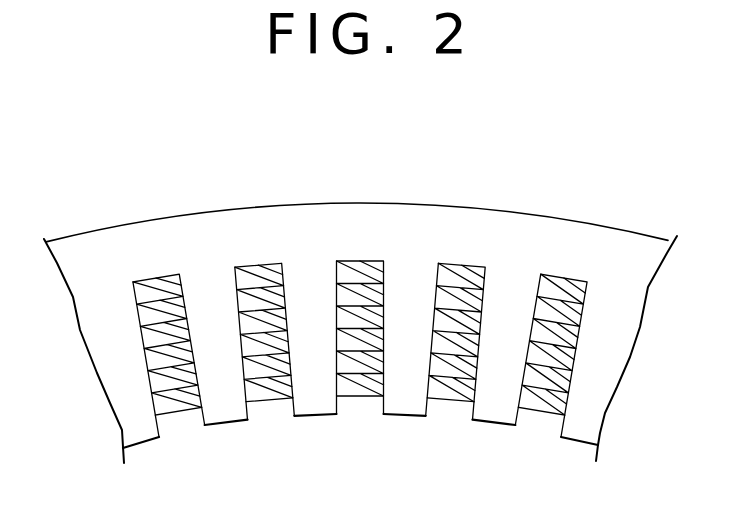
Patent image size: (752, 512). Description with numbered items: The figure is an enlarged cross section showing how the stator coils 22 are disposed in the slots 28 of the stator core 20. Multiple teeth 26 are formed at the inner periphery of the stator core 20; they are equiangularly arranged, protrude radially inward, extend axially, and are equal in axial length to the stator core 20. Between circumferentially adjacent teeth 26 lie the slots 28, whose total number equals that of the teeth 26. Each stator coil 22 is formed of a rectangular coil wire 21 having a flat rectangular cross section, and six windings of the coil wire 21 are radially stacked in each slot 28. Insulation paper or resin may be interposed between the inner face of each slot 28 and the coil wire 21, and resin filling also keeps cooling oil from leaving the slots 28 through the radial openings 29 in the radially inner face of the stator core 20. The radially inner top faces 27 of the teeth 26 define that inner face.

The stator core 20 is at (372, 204).
The coil wire 21 is at (478, 261).
The stator coil 22 is at (481, 283).
The teeth 26 is at (138, 373).
The top faces 27 is at (227, 427).
The slot 28 is at (479, 283).
The radial openings 29 is at (180, 427).